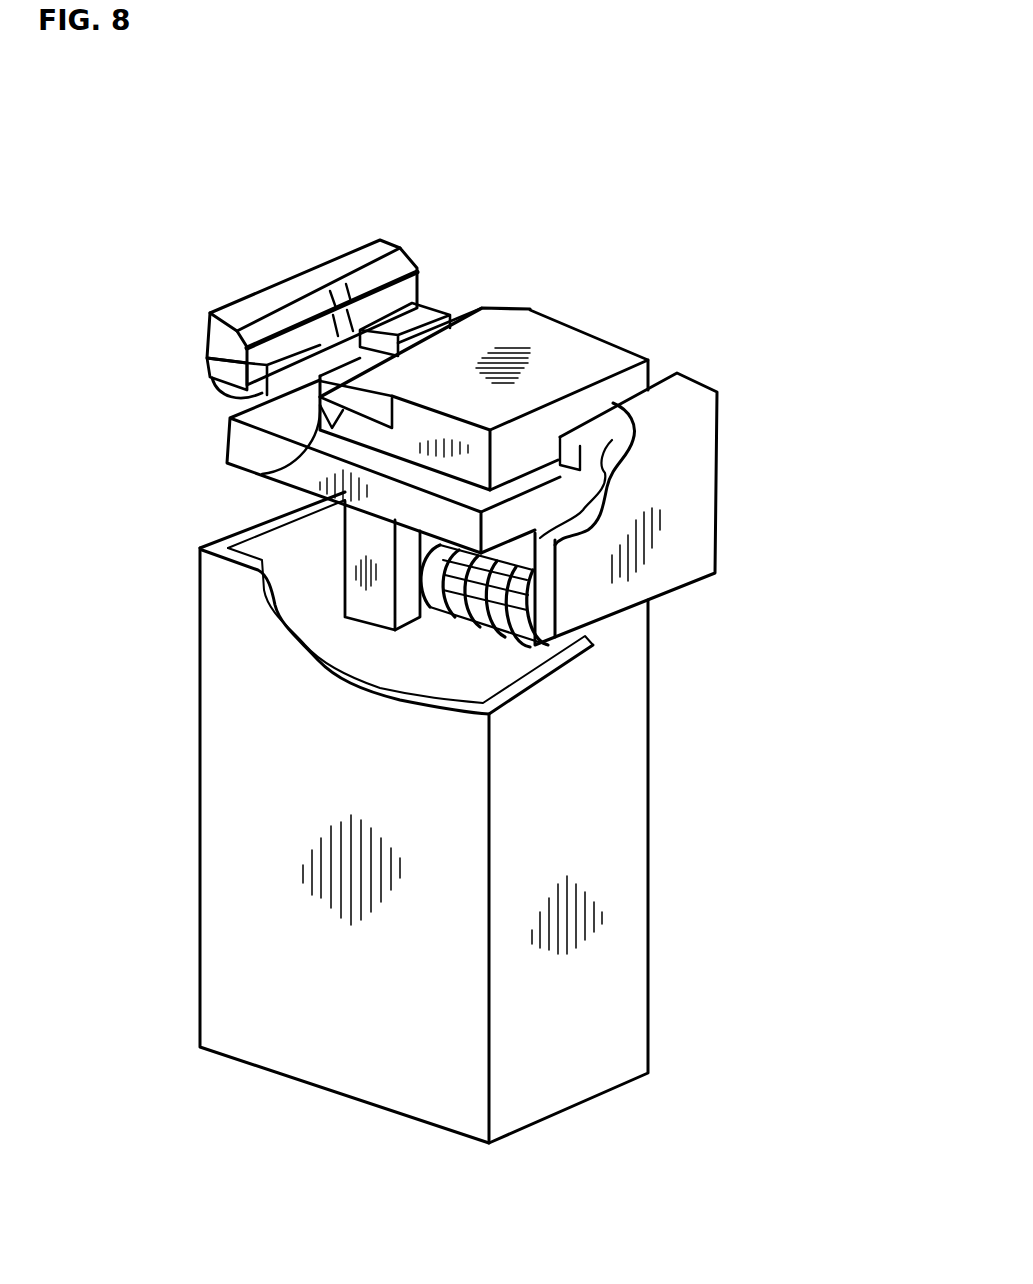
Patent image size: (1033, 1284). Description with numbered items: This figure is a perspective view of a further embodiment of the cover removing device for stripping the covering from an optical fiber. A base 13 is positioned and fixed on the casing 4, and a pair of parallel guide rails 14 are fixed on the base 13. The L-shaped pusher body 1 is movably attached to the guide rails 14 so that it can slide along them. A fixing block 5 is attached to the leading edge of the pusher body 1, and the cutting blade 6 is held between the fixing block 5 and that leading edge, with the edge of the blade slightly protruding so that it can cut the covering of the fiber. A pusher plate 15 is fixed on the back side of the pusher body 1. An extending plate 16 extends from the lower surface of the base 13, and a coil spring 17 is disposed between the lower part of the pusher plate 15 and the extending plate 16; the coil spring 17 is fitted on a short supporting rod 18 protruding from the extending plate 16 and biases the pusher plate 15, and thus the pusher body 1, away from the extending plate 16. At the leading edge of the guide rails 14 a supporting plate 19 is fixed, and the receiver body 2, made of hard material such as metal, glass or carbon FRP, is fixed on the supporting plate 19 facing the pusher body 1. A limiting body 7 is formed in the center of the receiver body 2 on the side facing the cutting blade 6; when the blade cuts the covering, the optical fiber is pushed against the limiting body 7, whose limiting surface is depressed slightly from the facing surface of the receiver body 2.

The pusher body 1 is at (600, 353).
The receiver body 2 is at (363, 255).
The casing 4 is at (628, 902).
The fixing block 5 is at (486, 308).
The cutting blade 6 is at (240, 470).
The limiting body 7 is at (333, 297).
The base 13 is at (237, 443).
The guide rails 14 is at (433, 312).
The pusher plate 15 is at (687, 520).
The extending plate 16 is at (357, 563).
The coil spring 17 is at (493, 633).
The supporting rod 18 is at (450, 627).
The supporting plate 19 is at (210, 378).